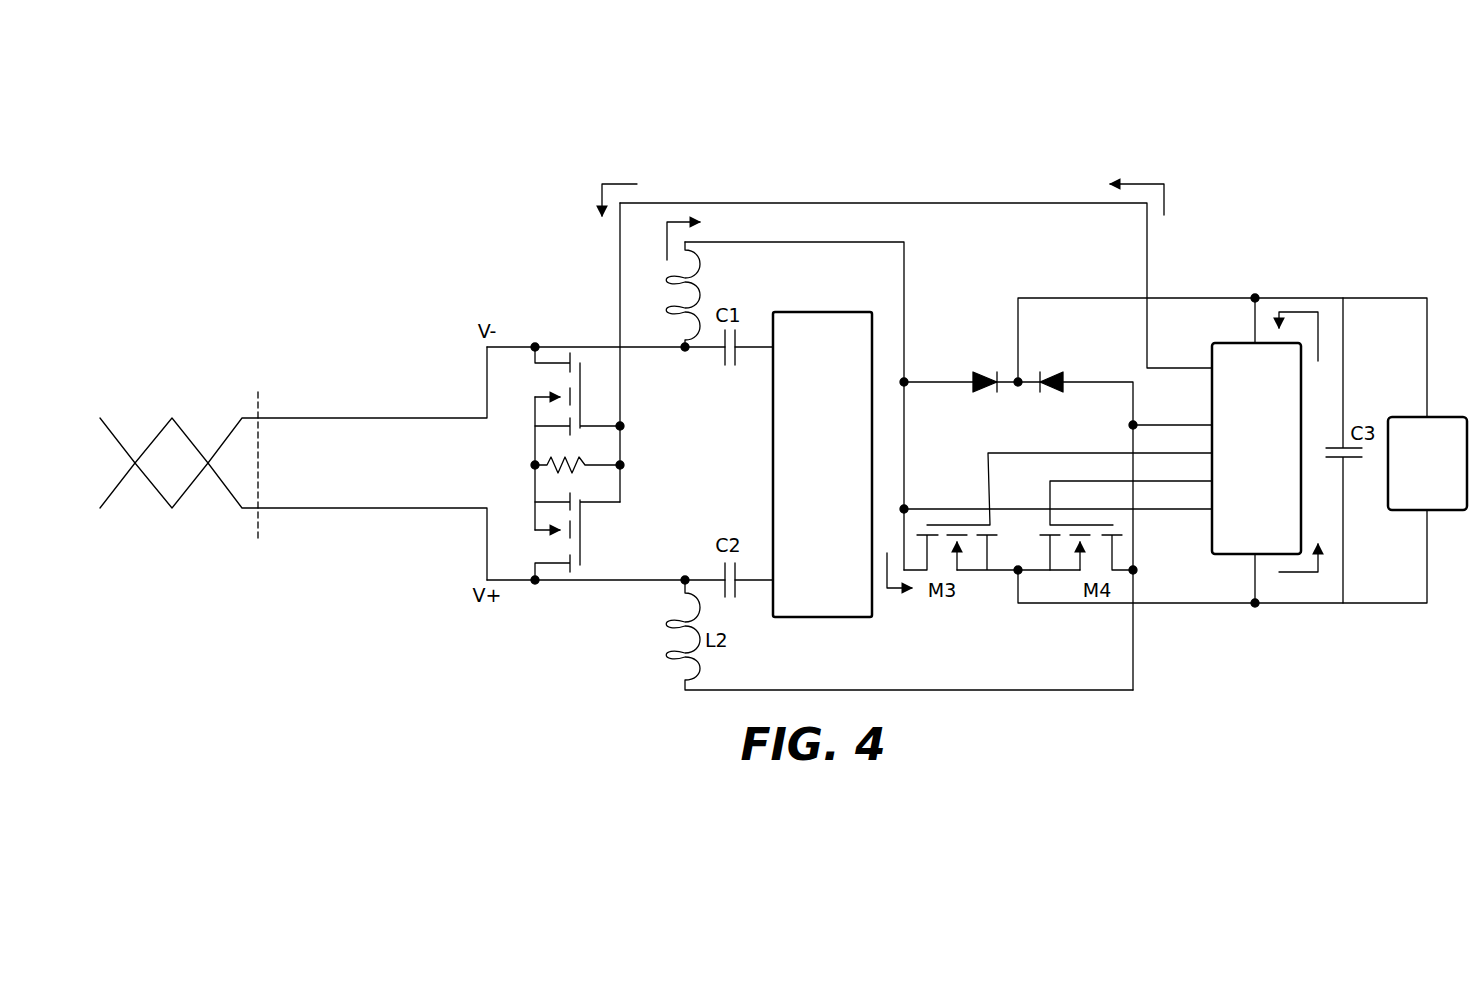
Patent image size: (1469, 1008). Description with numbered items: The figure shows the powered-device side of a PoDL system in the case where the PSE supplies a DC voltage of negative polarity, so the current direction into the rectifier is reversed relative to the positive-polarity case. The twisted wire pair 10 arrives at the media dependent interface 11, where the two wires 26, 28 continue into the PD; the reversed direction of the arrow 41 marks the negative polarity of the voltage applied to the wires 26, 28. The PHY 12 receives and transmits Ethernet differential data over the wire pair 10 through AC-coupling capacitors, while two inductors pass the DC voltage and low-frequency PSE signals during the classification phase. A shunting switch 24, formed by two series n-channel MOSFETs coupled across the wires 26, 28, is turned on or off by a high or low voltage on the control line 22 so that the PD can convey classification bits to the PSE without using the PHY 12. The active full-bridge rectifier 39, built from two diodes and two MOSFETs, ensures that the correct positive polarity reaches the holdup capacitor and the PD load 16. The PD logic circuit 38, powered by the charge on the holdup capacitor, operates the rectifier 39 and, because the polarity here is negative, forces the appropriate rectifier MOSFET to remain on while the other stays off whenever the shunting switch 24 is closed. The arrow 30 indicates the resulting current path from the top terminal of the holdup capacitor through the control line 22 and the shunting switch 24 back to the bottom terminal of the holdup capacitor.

The twisted wire pair 10 is at (292, 463).
The media dependent interface 11 is at (257, 520).
The wire 26 is at (228, 435).
The wire 28 is at (228, 492).
The shunting switch 24 is at (594, 368).
The arrow 41 is at (667, 237).
The PHY 12 is at (845, 312).
The control line 22 is at (993, 203).
The arrow 30 is at (1167, 203).
The active full-bridge rectifier 39 is at (983, 330).
The PD logic circuit 38 is at (1237, 343).
The PD load 16 is at (1415, 417).